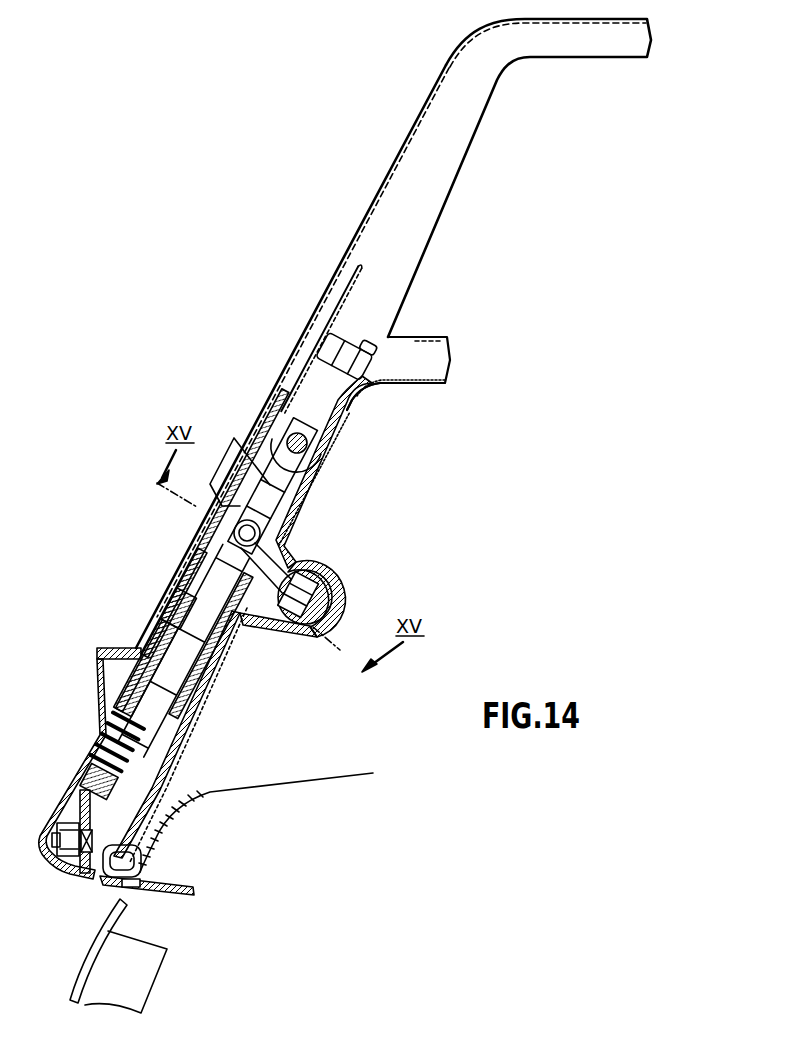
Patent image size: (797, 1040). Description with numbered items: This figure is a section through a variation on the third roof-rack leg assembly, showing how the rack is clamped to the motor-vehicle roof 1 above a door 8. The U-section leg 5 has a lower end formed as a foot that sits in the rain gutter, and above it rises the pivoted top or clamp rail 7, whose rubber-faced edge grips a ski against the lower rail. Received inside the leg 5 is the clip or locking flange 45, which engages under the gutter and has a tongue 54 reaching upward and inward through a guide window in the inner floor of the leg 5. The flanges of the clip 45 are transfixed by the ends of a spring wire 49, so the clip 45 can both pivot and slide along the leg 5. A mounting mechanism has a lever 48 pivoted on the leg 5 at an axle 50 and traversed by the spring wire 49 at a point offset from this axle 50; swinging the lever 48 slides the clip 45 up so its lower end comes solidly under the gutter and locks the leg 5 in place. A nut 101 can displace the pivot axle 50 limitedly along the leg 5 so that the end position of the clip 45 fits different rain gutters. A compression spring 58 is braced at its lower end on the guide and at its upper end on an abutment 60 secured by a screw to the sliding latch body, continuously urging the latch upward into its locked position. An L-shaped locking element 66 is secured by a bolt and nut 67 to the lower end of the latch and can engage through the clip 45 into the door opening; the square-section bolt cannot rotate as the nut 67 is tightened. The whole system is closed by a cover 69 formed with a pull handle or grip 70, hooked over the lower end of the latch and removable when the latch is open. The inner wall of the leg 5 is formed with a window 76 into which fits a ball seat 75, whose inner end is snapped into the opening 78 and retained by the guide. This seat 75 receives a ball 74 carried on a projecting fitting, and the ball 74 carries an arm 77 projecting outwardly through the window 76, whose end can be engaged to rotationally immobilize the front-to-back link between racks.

The motor-vehicle roof 1 is at (307, 778).
The leg 5 is at (423, 358).
The top or clamp rail 7 is at (407, 228).
The door 8 is at (142, 982).
The clip or locking flange 45 is at (218, 597).
The lever 48 is at (343, 313).
The spring wire 49 is at (302, 487).
The axle 50 is at (292, 432).
The tongue 54 is at (180, 770).
The compression spring 58 is at (98, 693).
The abutment 60 is at (157, 627).
The L-shaped locking element 66 is at (200, 888).
The bolt and nut 67 is at (72, 806).
The cover 69 is at (80, 752).
The pull handle or grip 70 is at (113, 653).
The ball 74 is at (340, 585).
The ball seat 75 is at (310, 642).
The window 76 is at (264, 591).
The arm 77 is at (297, 550).
The opening 78 is at (235, 440).
The nut 101 is at (368, 390).